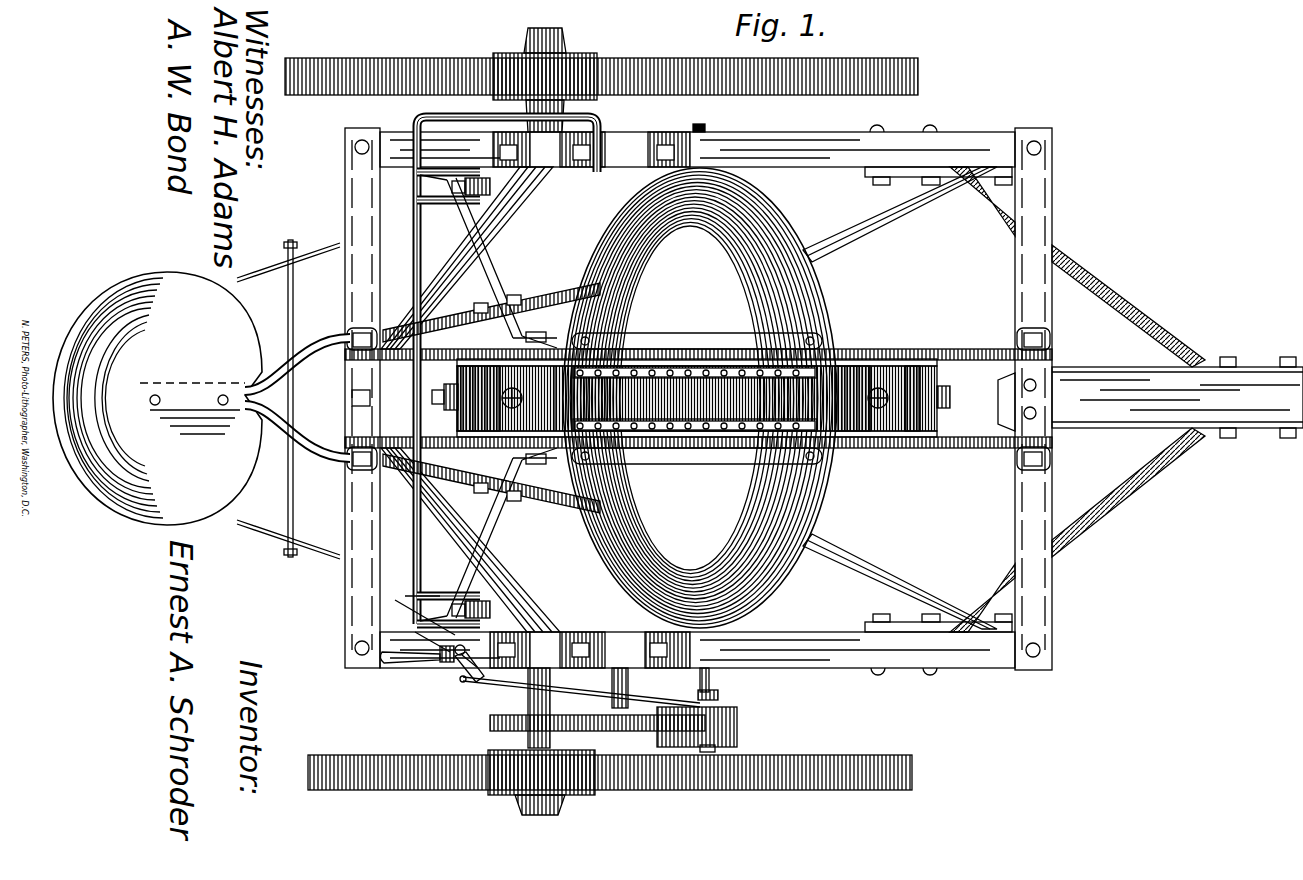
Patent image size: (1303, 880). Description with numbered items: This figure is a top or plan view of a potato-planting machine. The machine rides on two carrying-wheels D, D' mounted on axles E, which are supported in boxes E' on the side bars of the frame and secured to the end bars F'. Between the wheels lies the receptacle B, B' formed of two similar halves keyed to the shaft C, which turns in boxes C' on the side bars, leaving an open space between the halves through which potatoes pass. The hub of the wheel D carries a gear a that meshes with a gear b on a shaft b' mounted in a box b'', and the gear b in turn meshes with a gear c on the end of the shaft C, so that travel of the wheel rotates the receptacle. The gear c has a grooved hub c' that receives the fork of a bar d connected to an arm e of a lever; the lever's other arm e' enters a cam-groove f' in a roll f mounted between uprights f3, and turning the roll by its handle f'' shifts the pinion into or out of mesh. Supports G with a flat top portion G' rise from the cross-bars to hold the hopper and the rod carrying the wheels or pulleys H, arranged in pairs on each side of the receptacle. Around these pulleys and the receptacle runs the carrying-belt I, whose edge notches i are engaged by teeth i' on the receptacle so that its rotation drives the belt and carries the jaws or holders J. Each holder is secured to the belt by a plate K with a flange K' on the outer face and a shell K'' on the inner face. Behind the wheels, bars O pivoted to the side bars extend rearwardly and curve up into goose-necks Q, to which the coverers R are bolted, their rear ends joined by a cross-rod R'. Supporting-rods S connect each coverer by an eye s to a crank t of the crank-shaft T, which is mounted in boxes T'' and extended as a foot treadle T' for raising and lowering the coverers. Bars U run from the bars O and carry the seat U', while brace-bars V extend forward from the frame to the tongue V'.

The carrying-wheel D' is at (616, 80).
The carrying-wheel D is at (622, 782).
The receptacle B is at (700, 398).
The drum interior B' is at (690, 398).
The support G is at (698, 395).
The flat top portion G' is at (695, 407).
The carrying-belt I is at (707, 398).
The notches or recesses i is at (931, 394).
The teeth or projections i' is at (688, 406).
The plate K is at (719, 403).
The flange or projection K' is at (1001, 399).
The shell K'' is at (462, 420).
The wheels or pulleys H is at (572, 341).
The jaws or holders J is at (442, 397).
The crank-shaft T is at (956, 396).
The end bars F' is at (377, 392).
The axles E is at (470, 441).
The boxes E' is at (580, 400).
The boxes C' is at (645, 383).
The shaft C is at (717, 401).
The boxes T'' is at (520, 360).
The foot treadle or lever T' is at (436, 398).
The supporting-rods S is at (486, 398).
The eye s is at (456, 397).
The goose-neck Q is at (722, 403).
The cranks t is at (467, 398).
The bars U is at (491, 401).
The bars O is at (900, 214).
The brace-bars V is at (1128, 401).
The tongue V' is at (1177, 397).
The seat U' is at (157, 398).
The cross-rod R' is at (297, 398).
The coverers R is at (288, 399).
The box b'' is at (579, 677).
The shaft b' is at (634, 688).
The gear a is at (583, 723).
The gear b is at (675, 732).
The gear c is at (731, 730).
The hub c' is at (732, 695).
The bar d is at (580, 688).
The arm e is at (467, 671).
The arm e' is at (451, 676).
The handle or lever f'' is at (385, 676).
The roll f is at (408, 675).
The cam-groove f' is at (420, 620).
The uprights f3 is at (420, 596).